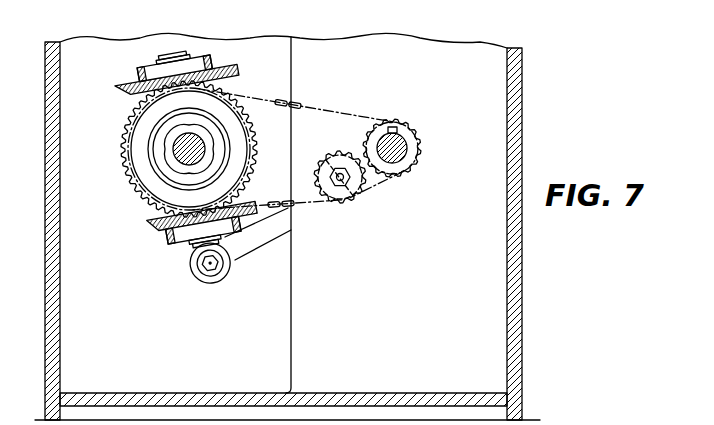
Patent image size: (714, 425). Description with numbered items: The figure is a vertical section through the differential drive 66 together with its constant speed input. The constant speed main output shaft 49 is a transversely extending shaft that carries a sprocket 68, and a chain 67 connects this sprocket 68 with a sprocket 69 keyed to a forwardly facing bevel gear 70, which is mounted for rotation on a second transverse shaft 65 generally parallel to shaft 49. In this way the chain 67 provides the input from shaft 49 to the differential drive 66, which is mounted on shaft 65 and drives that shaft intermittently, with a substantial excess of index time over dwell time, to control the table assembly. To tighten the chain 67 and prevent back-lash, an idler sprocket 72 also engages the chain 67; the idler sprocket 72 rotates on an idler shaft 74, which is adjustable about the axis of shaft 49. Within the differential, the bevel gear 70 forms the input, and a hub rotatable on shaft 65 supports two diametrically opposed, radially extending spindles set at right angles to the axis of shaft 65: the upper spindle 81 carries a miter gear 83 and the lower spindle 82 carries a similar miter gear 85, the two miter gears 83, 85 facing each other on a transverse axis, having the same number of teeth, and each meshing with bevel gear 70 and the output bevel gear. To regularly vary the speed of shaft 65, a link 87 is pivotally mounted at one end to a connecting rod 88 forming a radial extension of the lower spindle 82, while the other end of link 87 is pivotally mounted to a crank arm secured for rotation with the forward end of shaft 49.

The constant speed main output shaft 49 is at (403, 143).
The transverse shaft 65 is at (182, 148).
The differential drive 66 is at (191, 245).
The chain 67 is at (304, 100).
The sprocket 68 is at (423, 150).
The sprocket 69 is at (255, 140).
The forwardly facing bevel gear 70 is at (128, 128).
The idler sprocket 72 is at (322, 176).
The idler shaft 74 is at (340, 186).
The upper spindle 81 is at (180, 54).
The lower spindle 82 is at (186, 238).
The miter gear 83 is at (231, 82).
The miter gear 85 is at (148, 218).
The link 87 is at (247, 256).
The connecting rod 88 is at (191, 247).